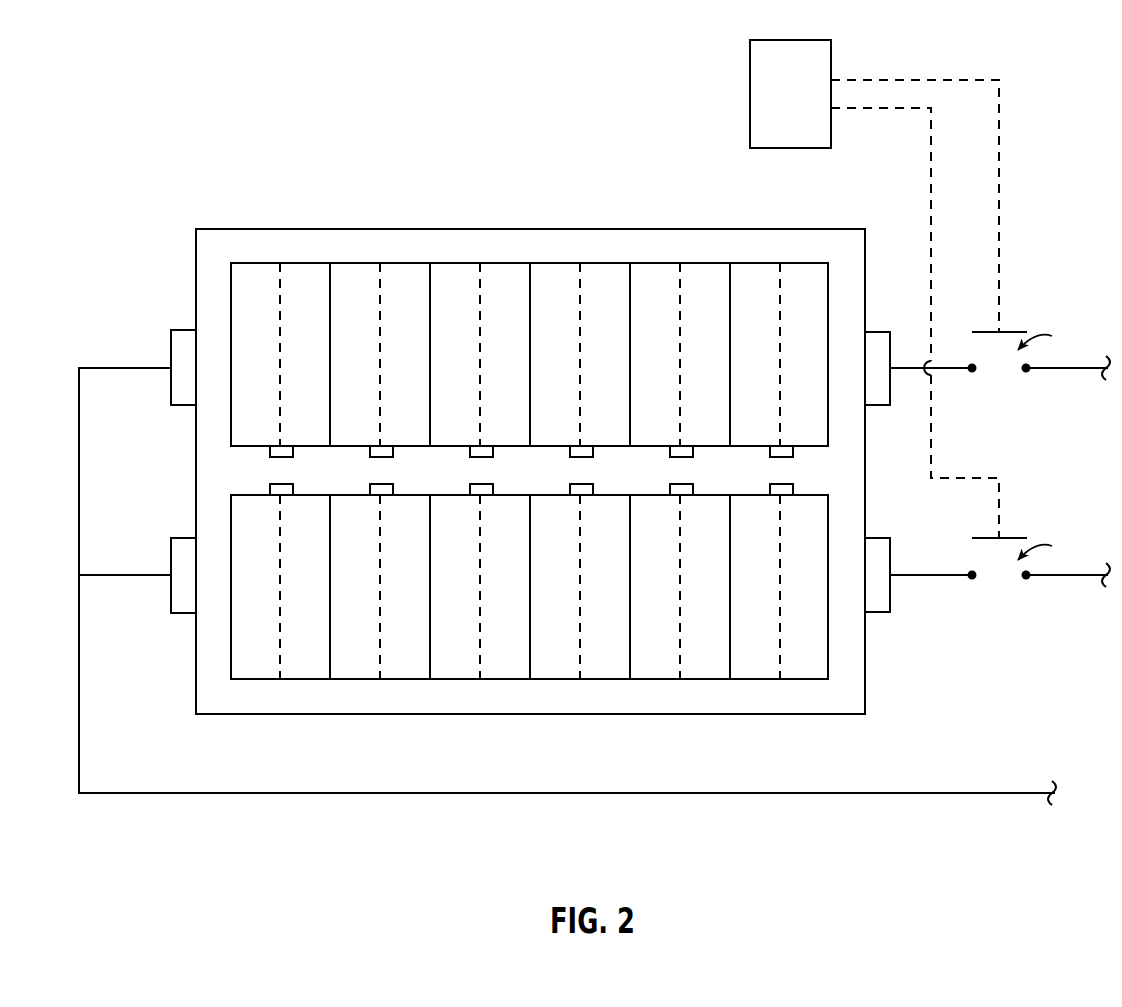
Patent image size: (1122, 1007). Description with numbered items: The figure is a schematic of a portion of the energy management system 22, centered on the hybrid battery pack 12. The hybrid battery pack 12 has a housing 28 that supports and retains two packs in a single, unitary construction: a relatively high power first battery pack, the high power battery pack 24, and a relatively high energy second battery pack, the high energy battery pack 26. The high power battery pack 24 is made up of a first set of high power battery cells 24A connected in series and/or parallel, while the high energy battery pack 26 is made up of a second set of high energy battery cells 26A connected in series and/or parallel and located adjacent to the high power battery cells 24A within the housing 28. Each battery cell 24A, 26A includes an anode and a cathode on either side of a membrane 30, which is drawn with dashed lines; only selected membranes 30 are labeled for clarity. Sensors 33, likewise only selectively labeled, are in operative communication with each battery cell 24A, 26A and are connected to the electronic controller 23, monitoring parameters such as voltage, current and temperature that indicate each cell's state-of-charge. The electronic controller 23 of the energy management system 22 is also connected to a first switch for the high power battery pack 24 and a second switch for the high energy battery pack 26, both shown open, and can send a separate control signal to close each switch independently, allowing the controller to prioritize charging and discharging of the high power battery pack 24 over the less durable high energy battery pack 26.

The energy management system 22 is at (138, 86).
The hybrid battery pack 12 is at (836, 170).
The electronic controller 23 is at (775, 108).
The high power battery pack 24 is at (262, 636).
The high power battery cells 24A is at (355, 657).
The high energy battery pack 26 is at (262, 306).
The high energy battery cells 26A is at (353, 283).
The housing 28 is at (578, 228).
The membrane 30 is at (382, 298).
The sensors 33 is at (269, 488).